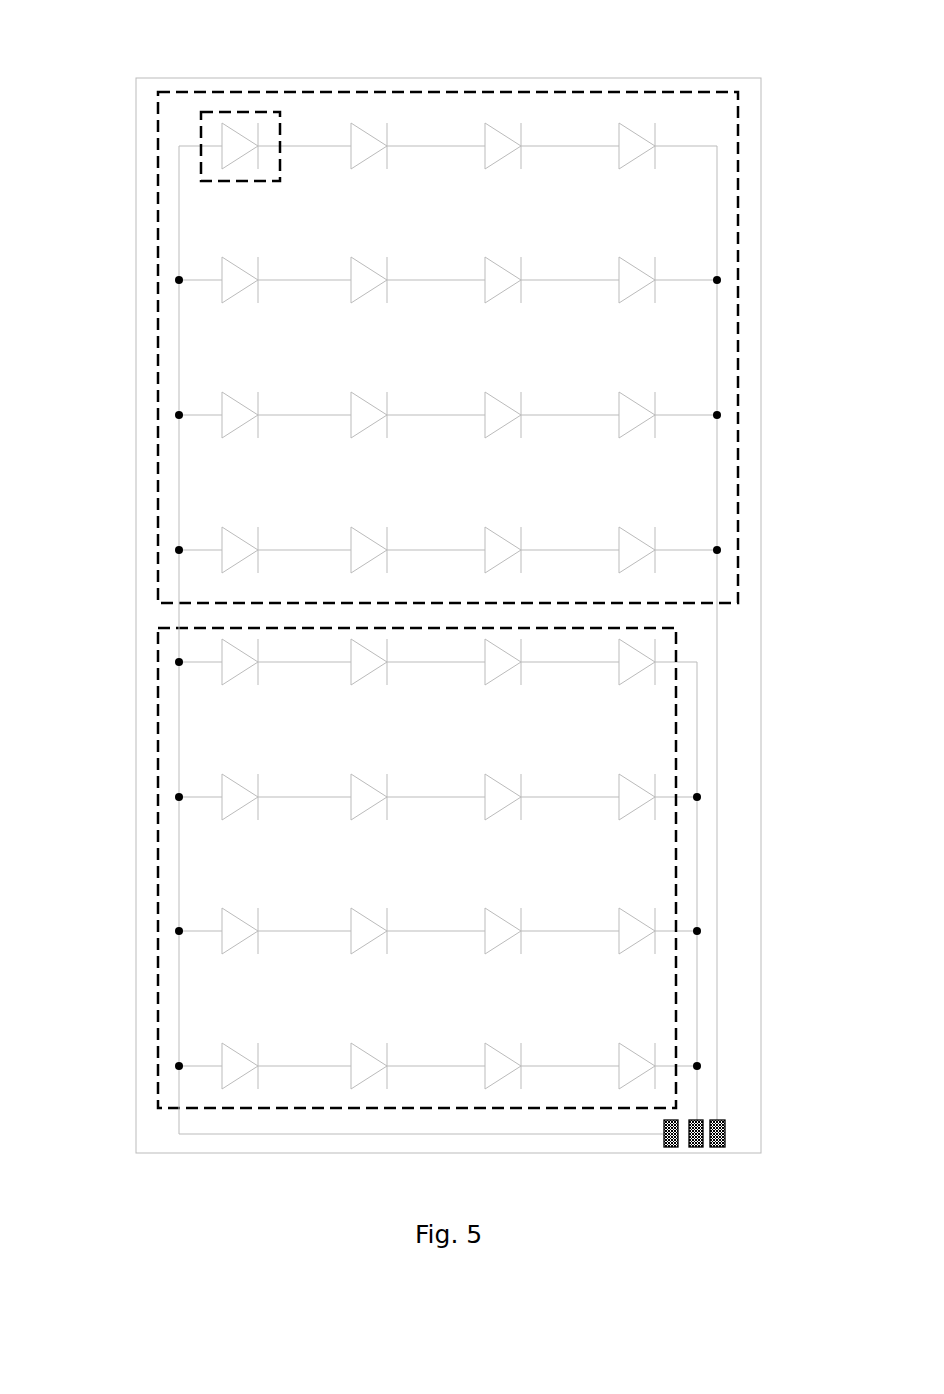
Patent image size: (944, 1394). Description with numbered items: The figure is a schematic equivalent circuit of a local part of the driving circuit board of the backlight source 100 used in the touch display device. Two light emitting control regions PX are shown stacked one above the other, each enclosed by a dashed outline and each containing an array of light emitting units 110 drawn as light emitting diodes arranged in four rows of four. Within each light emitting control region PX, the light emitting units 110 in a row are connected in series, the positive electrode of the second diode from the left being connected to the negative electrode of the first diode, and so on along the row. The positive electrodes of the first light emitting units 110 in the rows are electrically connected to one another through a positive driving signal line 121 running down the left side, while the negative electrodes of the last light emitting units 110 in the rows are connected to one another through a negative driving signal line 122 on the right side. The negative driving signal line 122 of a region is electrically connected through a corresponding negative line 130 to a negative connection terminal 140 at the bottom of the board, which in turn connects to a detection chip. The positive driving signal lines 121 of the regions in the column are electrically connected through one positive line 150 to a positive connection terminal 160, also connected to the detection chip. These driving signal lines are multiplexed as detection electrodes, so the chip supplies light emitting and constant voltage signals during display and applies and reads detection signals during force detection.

The backlight source 100 is at (150, 88).
The light emitting control region PX is at (448, 92).
The light emitting unit 110 is at (235, 100).
The positive driving signal line 121 is at (179, 212).
The negative driving signal line 122 is at (717, 235).
The negative line 130 is at (717, 626).
The negative connection terminal 140 is at (696, 1147).
The positive line 150 is at (178, 590).
The positive connection terminal 160 is at (671, 1147).